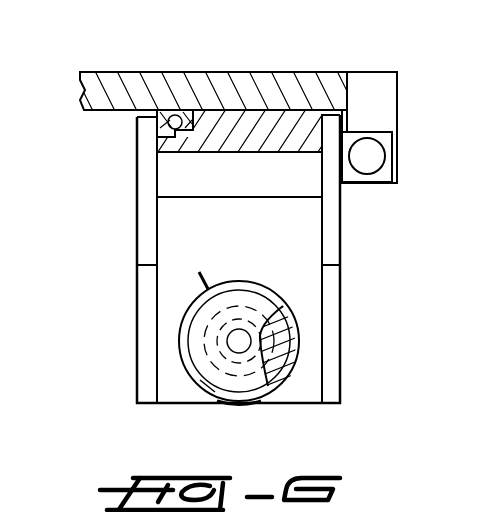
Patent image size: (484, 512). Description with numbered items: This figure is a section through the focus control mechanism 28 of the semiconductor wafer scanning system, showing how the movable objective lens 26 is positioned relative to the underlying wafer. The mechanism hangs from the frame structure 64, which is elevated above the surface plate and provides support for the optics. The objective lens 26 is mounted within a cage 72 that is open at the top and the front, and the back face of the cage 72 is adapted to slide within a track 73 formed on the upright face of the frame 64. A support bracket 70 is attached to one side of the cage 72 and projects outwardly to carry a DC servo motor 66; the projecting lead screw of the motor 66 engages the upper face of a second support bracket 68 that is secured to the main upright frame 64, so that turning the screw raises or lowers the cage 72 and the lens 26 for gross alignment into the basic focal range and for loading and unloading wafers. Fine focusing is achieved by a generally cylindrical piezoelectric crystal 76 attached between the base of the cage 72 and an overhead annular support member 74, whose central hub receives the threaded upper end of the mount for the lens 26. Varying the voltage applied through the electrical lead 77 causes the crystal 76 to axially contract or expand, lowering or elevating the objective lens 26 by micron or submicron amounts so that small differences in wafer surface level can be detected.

The frame structure 64 is at (124, 85).
The track 73 is at (162, 110).
The support bracket 68 is at (365, 88).
The support bracket 70 is at (384, 134).
The DC servo motor 66 is at (368, 165).
The cage 72 is at (172, 243).
The focus control mechanism 28 is at (134, 340).
The electrical lead 77 is at (203, 272).
The annular support member 74 is at (237, 297).
The piezoelectric crystal 76 is at (282, 388).
The objective lens 26 is at (218, 406).